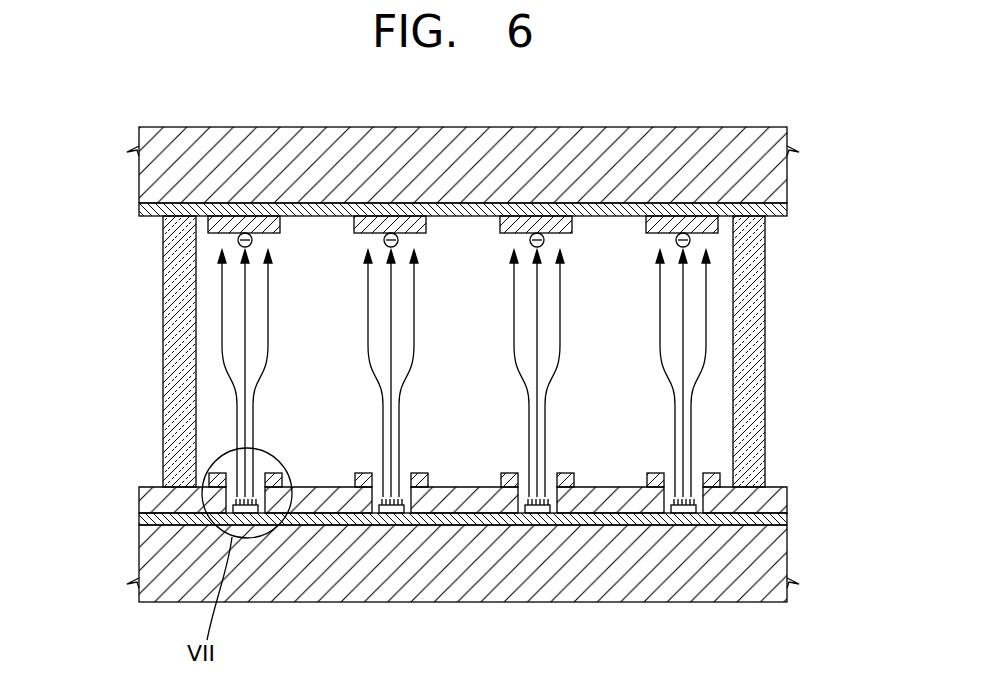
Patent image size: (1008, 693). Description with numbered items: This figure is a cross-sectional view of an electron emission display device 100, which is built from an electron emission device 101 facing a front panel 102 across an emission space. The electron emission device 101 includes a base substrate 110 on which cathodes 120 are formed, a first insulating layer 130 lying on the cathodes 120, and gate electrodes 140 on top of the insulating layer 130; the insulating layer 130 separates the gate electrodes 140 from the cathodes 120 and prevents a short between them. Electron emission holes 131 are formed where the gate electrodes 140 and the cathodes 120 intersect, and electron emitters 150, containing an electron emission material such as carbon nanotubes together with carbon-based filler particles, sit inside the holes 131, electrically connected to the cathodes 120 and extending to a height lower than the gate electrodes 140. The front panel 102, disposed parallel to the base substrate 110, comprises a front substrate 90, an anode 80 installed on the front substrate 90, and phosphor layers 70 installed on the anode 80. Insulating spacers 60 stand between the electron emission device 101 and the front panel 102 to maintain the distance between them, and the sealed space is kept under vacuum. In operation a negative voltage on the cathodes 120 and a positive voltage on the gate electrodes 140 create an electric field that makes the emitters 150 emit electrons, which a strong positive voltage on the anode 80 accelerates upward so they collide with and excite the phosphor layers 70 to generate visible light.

The spacer 60 is at (753, 405).
The phosphor layer 70 is at (712, 224).
The anode 80 is at (778, 209).
The front substrate 90 is at (778, 189).
The electron emission display device 100 is at (93, 297).
The electron emission device 101 is at (153, 476).
The front panel 102 is at (152, 226).
The base substrate 110 is at (778, 553).
The cathode 120 is at (778, 518).
The first insulating layer 130 is at (778, 503).
The electron emission hole 131 is at (519, 504).
The gate electrode 140 is at (655, 484).
The electron emitter 150 is at (535, 526).